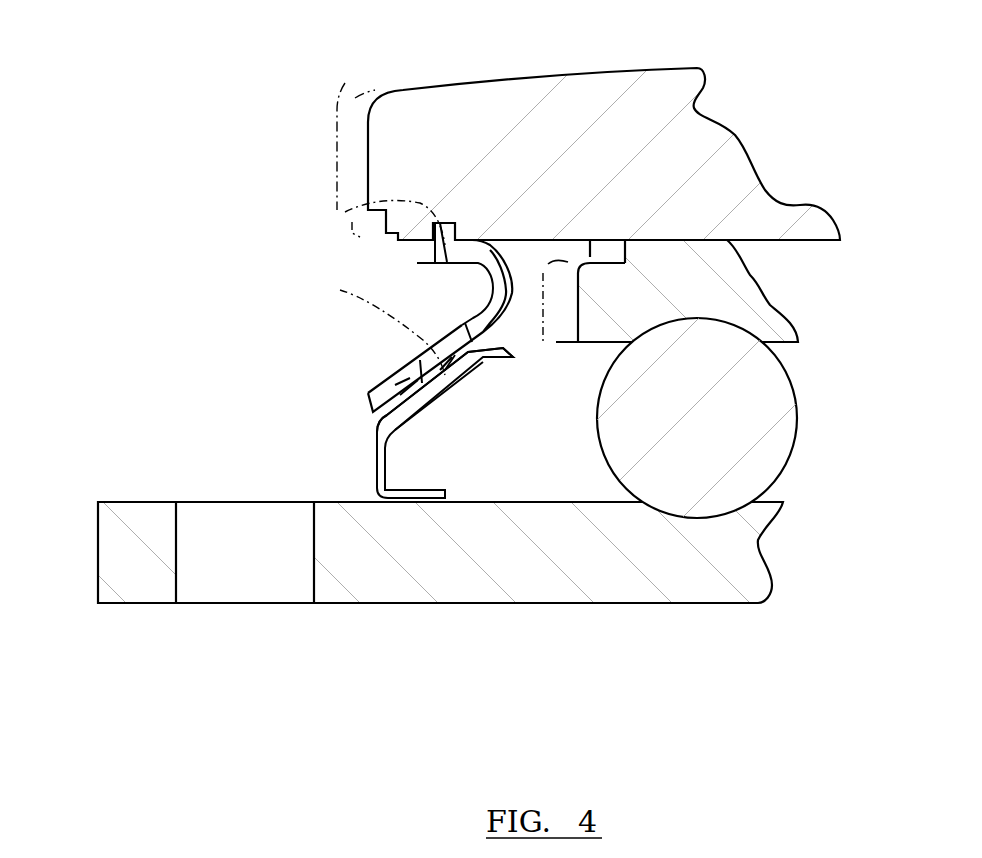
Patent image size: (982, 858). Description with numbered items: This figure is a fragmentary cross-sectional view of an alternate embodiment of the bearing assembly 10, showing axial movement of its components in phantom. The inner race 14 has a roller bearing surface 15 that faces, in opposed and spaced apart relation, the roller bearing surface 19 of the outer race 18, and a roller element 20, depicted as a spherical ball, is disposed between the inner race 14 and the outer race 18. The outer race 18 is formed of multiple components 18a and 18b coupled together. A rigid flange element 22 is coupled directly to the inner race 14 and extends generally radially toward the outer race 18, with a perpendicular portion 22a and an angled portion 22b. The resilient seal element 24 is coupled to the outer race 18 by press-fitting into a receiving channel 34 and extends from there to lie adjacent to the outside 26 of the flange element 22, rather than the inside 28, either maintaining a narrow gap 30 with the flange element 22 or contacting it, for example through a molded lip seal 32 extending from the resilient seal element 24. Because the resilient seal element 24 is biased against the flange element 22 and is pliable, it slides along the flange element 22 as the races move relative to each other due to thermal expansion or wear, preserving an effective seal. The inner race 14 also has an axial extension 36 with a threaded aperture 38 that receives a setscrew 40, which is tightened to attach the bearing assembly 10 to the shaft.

The bearing assembly 10 is at (175, 106).
The inner race 14 is at (515, 572).
The roller bearing surface 15 is at (702, 520).
The outer race 18 is at (398, 66).
The outer race component 18a is at (546, 125).
The outer race component 18b is at (718, 253).
The roller bearing surface 19 is at (707, 320).
The roller elements 20 is at (680, 468).
The flange element 22 is at (410, 513).
The perpendicular portion 22a is at (377, 462).
The angled portion 22b is at (390, 448).
The resilient seal element 24 is at (380, 385).
The outside 26 is at (460, 370).
The inside 28 is at (453, 383).
The narrow gap 30 is at (515, 350).
The molded lip seal 32 is at (397, 397).
The receiving channel 34 is at (443, 228).
The axial extension 36 is at (122, 547).
The threaded aperture 38 is at (175, 575).
The setscrew 40 is at (215, 572).